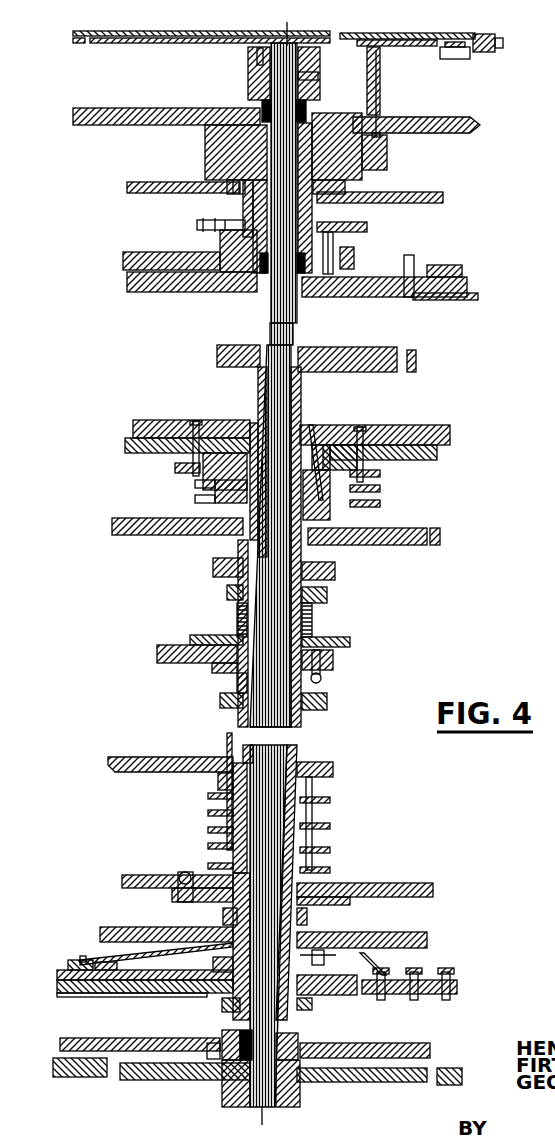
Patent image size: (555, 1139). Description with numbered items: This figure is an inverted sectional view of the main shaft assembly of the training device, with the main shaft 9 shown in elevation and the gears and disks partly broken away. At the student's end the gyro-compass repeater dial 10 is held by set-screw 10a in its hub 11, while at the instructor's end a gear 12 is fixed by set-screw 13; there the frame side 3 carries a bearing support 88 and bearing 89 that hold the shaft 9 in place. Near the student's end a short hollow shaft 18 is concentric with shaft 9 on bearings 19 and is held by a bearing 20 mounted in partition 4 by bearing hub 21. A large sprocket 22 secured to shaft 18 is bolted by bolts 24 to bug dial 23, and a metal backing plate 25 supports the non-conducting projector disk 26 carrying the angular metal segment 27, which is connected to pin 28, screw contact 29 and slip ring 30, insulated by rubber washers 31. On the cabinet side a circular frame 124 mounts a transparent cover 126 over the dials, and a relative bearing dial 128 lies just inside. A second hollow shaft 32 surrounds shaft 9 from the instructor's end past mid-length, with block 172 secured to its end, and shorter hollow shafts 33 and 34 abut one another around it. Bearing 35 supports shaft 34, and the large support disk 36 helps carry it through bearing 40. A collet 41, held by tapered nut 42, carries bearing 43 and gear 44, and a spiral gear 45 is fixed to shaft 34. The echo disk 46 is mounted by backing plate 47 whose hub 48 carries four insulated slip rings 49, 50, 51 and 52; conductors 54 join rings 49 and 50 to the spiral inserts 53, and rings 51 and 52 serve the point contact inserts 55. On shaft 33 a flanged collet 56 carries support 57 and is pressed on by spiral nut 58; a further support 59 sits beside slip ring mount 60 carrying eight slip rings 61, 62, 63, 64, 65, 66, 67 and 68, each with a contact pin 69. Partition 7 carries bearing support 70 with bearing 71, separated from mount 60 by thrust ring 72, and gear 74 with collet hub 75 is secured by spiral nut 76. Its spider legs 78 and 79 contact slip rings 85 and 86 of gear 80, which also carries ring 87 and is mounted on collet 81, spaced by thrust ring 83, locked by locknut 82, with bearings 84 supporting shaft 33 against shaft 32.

The transparent cover 126 is at (186, 37).
The gyro-compass repeater dial 10 is at (193, 42).
The set-screw 10a is at (260, 56).
The main shaft 9 is at (293, 52).
The hub 11 is at (319, 66).
The bug dial 23 is at (392, 48).
The relative bearing dial 128 is at (430, 48).
The circular frame 124 is at (490, 35).
The bearings 19 is at (307, 109).
The large sprocket 22 is at (123, 108).
The bolts 24 is at (381, 101).
The short hollow shaft 18 is at (313, 156).
The frame side 4 is at (141, 182).
The bearing hub 21 is at (226, 186).
The bearing 20 is at (316, 206).
The rubber washers 31 is at (205, 226).
The slip ring 30 is at (361, 228).
The screw contact 29 is at (340, 242).
The pin 28 is at (347, 252).
The metal backing plate 25 is at (131, 253).
The projector disk 26 is at (141, 292).
The angular metal segment 27 is at (431, 296).
The block 172 is at (220, 350).
The bearing 35 is at (256, 423).
The echo disk 46 is at (141, 420).
The metal backing plate 47 is at (125, 446).
The metal inserts 53 is at (196, 420).
The conductors 54 is at (192, 455).
The slip ring 49 is at (178, 468).
The slip ring 50 is at (196, 483).
The large support disk 36 is at (120, 520).
The hub 48 is at (340, 430).
The point contact inserts 55 is at (312, 425).
The slip ring 51 is at (382, 489).
The slip ring 52 is at (381, 504).
The bearing 40 is at (325, 519).
The spiral gear 45 is at (213, 565).
The tapered nut 42 is at (227, 592).
The collet 41 is at (306, 607).
The hollow shaft 34 is at (238, 611).
The gear 44 is at (192, 635).
The bearing 43 is at (308, 630).
The support 57 is at (160, 647).
The collet 56 is at (238, 681).
The spiral nut 58 is at (221, 701).
The hollow shaft 33 is at (258, 719).
The second hollow shaft 32 is at (292, 721).
The additional support 59 is at (116, 757).
The contact pin 69 is at (226, 741).
The slip ring mount 60 is at (219, 780).
The slip ring 61 is at (208, 796).
The slip ring 63 is at (208, 813).
The slip ring 65 is at (208, 830).
The slip ring 67 is at (208, 847).
The thrust ring 72 is at (226, 873).
The slip ring 62 is at (330, 804).
The slip ring 64 is at (330, 828).
The slip ring 66 is at (330, 851).
The slip ring 68 is at (330, 871).
The partition 7 is at (135, 875).
The bearing support 70 is at (176, 896).
The bearing 71 is at (302, 905).
The spiral nut 76 is at (223, 916).
The collet hub 75 is at (307, 919).
The bearings 84 is at (233, 931).
The gear 74 is at (420, 935).
The thrust ring 83 is at (318, 957).
The shorter legs 78 is at (366, 958).
The longer legs 79 is at (84, 958).
The slip ring 86 is at (70, 961).
The slip ring 85 is at (112, 966).
The slip ring 87 is at (452, 976).
The collet 81 is at (214, 965).
The gear 80 is at (57, 982).
The locknut 82 is at (222, 1005).
The bearing 89 is at (222, 1035).
The bearing support 88 is at (300, 1036).
The frame side 3 is at (414, 1050).
The gear 12 is at (125, 1072).
The set-screw 13 is at (294, 1094).